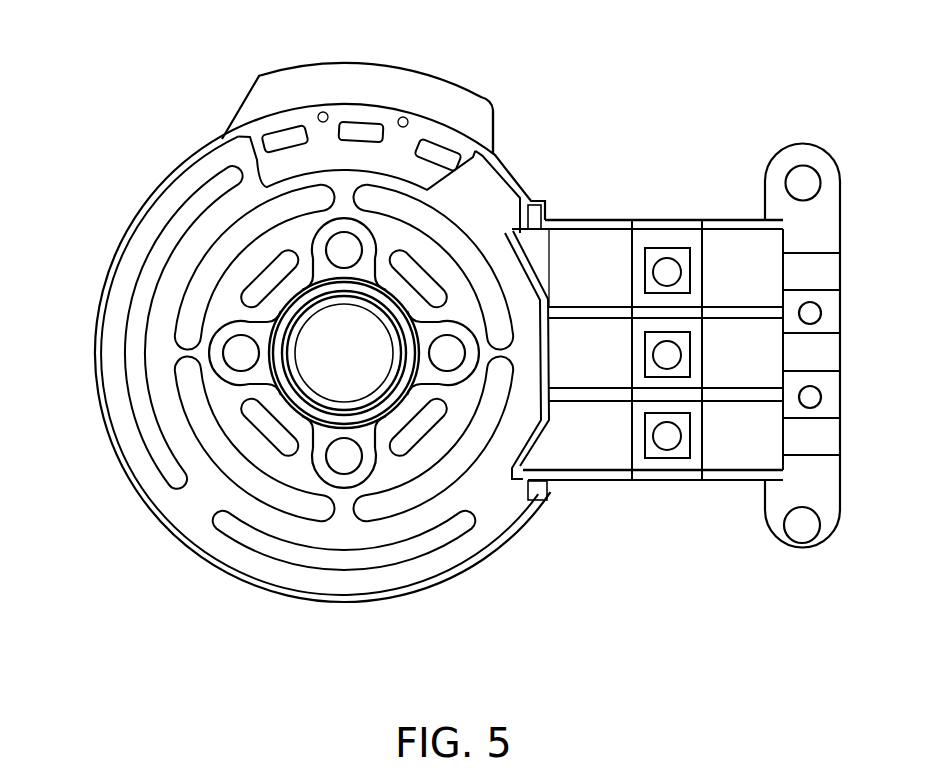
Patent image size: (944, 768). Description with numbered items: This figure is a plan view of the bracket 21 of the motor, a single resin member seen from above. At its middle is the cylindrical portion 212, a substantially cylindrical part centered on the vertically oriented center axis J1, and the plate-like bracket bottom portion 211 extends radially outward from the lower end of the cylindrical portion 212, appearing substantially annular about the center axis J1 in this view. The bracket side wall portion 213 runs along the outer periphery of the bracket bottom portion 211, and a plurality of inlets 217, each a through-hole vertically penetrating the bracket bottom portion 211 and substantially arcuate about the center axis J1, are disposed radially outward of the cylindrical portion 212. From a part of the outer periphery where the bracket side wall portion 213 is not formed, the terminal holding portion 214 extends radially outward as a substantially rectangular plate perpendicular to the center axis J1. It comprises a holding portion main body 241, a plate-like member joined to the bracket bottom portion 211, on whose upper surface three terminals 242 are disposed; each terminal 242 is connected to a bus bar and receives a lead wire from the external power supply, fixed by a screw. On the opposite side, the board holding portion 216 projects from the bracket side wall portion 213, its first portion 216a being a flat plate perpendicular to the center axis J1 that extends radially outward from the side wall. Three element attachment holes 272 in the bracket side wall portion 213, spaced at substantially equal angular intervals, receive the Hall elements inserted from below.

The bracket 21 is at (146, 24).
The bracket bottom portion 211 is at (297, 580).
The cylindrical portion 212 is at (345, 445).
The bracket side wall portion 213 is at (247, 583).
The terminal holding portion 214 is at (753, 144).
The board holding portion 216 is at (584, 25).
The first portion 216a is at (468, 122).
The inlet 217 is at (196, 200).
The holding portion main body 241 is at (603, 265).
The terminal 242 is at (668, 268).
The element attachment hole 272 is at (278, 127).
The center axis J1 is at (341, 353).